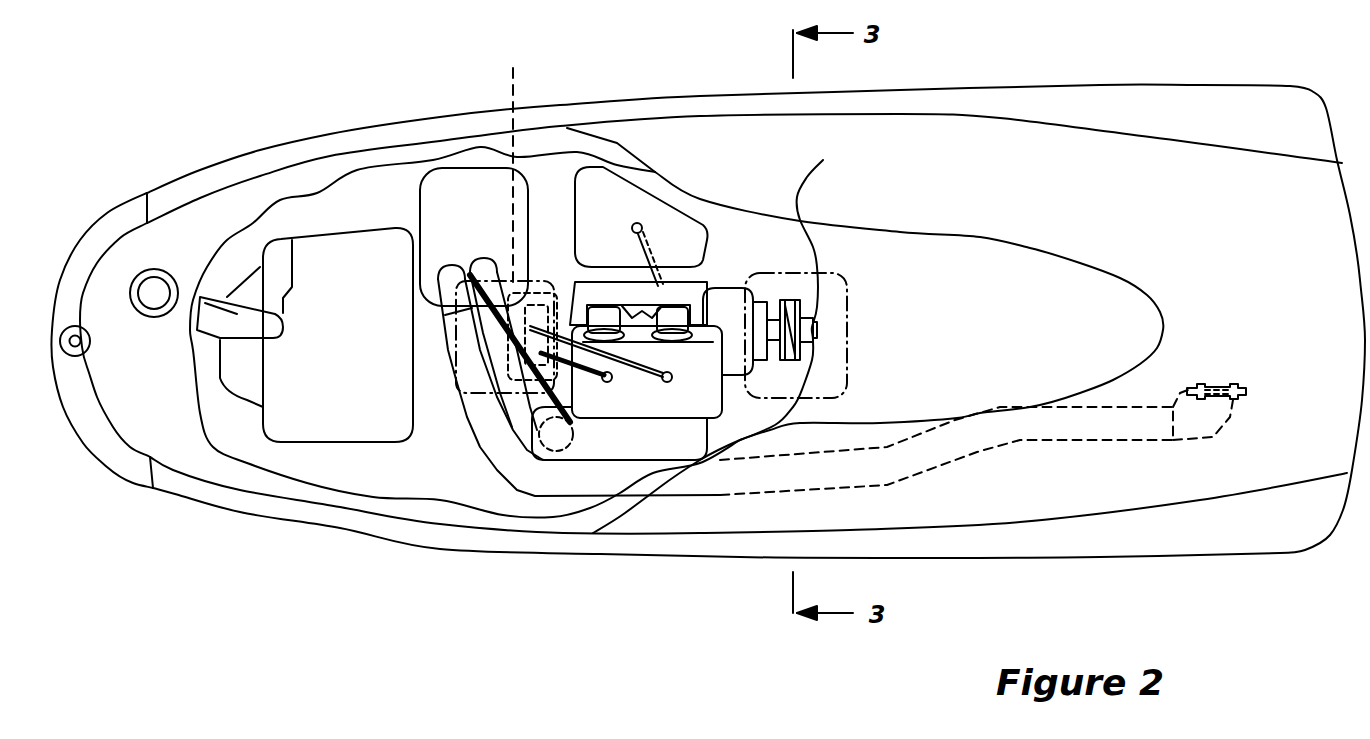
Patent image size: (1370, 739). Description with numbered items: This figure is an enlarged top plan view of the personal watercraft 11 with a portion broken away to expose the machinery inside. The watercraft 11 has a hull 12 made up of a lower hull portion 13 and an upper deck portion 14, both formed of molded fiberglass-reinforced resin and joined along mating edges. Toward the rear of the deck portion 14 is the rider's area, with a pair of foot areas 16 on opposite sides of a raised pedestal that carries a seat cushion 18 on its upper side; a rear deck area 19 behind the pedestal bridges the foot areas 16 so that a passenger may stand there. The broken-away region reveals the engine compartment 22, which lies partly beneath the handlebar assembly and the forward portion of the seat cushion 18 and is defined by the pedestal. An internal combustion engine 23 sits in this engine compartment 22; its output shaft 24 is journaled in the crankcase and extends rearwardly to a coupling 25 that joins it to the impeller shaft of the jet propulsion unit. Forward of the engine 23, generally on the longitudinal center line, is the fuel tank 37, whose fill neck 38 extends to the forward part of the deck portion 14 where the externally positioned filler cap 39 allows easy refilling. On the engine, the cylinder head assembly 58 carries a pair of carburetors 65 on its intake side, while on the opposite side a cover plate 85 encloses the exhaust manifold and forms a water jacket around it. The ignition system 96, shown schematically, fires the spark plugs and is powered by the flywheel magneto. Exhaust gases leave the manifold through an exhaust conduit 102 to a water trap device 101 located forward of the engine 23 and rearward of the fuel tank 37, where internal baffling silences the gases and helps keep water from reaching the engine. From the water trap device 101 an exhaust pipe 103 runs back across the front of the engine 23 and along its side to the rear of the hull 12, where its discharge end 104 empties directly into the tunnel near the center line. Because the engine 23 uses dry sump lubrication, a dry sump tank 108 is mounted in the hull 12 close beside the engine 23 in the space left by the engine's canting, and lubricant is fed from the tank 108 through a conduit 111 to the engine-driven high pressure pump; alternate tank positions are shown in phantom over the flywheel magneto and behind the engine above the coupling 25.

The personal watercraft 11 is at (1108, 80).
The hull 12 is at (170, 500).
The lower hull portion 13 is at (587, 560).
The upper deck portion 14 is at (217, 210).
The foot areas 16 is at (977, 189).
The seat cushion 18 is at (1030, 262).
The rear deck area 19 is at (1267, 342).
The engine compartment 22 is at (566, 214).
The internal combustion engine 23 is at (798, 288).
The output shaft 24 is at (808, 378).
The coupling 25 is at (788, 300).
The fuel tank 37 is at (352, 427).
The fill neck 38 is at (203, 331).
The filler cap 39 is at (165, 276).
The cylinder head assembly 58 is at (723, 397).
The carburetors 65 is at (610, 315).
The cover plate 85 is at (687, 437).
The ignition system 96 is at (506, 163).
The water trap device 101 is at (421, 196).
The exhaust conduit 102 is at (527, 407).
The exhaust pipe 103 is at (492, 453).
The discharge end 104 is at (1230, 384).
The dry sump tank 108 is at (690, 182).
The conduit 111 is at (736, 263).